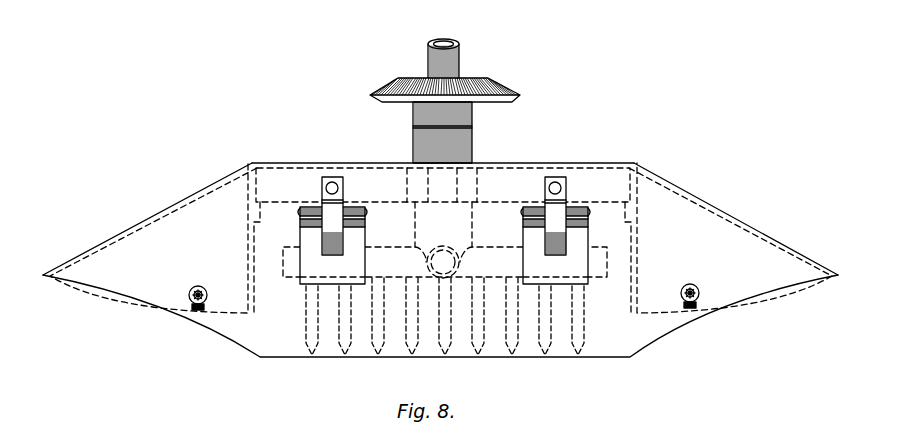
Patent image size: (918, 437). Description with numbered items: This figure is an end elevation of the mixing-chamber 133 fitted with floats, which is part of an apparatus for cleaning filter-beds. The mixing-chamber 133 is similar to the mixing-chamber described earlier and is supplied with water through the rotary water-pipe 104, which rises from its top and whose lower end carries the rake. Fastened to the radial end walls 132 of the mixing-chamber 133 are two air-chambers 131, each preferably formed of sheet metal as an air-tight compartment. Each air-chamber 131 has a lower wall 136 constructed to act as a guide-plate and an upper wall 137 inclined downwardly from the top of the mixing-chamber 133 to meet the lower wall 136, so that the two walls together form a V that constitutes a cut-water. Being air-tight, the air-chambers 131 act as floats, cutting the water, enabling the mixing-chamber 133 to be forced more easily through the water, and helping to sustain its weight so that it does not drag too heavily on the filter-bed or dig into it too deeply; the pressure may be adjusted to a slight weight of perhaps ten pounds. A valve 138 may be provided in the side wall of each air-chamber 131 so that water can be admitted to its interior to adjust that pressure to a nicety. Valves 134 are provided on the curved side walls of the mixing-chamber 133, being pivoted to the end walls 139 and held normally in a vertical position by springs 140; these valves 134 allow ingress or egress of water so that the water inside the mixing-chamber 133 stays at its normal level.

The rotary water-pipe 104 is at (459, 62).
The air-chamber 131 is at (449, 220).
The radial end wall 132 is at (242, 193).
The mixing-chamber 133 is at (472, 158).
The valve 134 is at (366, 234).
The lower wall 136 is at (130, 308).
The upper wall 137 is at (125, 230).
The valve 138 is at (197, 311).
The end wall 139 is at (294, 212).
The spring 140 is at (341, 214).